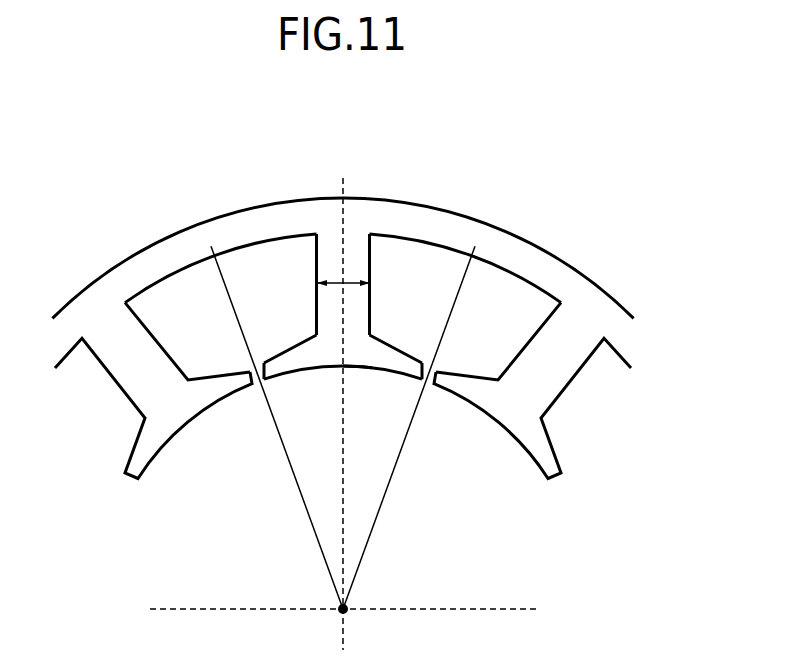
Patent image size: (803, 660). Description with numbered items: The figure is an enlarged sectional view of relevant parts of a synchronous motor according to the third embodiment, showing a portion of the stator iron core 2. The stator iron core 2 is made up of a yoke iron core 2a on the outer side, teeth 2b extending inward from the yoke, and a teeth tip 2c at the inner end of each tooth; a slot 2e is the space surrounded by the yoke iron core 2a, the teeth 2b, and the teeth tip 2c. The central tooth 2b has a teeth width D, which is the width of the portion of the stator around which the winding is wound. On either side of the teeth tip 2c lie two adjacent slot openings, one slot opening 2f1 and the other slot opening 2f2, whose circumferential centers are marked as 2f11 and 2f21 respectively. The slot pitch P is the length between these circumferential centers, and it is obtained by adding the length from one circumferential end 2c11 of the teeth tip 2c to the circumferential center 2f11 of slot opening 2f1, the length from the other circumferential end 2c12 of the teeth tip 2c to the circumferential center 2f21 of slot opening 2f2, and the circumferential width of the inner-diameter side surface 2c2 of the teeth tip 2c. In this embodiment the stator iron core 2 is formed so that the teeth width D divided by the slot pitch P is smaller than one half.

The stator iron core 2 is at (451, 192).
The yoke iron core 2a is at (522, 260).
The teeth 2b is at (355, 268).
The teeth tip 2c is at (382, 348).
The one circumferential end of the teeth tip 2c11 is at (268, 380).
The other circumferential end of the teeth tip 2c12 is at (418, 380).
The inner-diameter side surface of the teeth tip 2c2 is at (332, 368).
The slot 2e is at (477, 318).
The one slot opening 2f1 is at (254, 378).
The other slot opening 2f2 is at (432, 378).
The circumferential center of one slot opening 2f11 is at (257, 384).
The circumferential center of the other slot opening 2f21 is at (429, 384).
The teeth width D is at (332, 278).
The slot pitch P is at (372, 369).